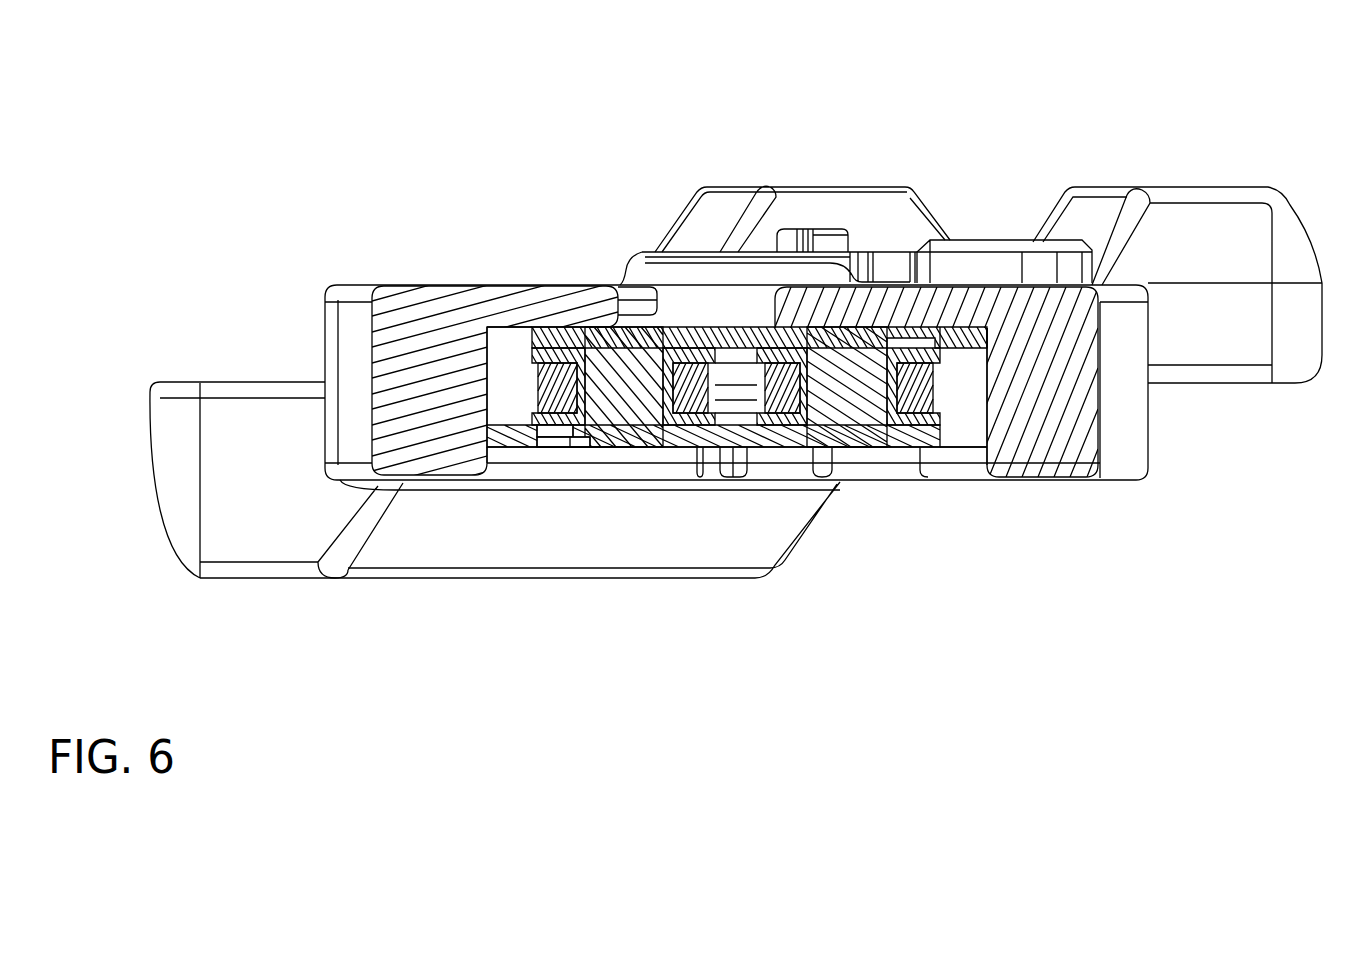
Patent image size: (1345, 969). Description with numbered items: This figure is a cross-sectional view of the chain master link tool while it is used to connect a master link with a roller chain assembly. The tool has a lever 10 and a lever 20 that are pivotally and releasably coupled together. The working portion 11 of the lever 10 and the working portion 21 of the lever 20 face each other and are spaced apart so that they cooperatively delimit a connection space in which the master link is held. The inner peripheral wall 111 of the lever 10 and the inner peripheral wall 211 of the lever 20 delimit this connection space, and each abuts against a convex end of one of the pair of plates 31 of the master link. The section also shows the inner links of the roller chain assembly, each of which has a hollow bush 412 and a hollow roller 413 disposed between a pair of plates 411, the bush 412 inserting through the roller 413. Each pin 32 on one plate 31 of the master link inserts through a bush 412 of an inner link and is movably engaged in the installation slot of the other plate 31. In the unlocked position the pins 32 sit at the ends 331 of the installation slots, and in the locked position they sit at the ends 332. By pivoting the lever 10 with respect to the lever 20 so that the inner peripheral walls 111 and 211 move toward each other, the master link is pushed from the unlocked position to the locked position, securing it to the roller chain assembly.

The lever 10 is at (290, 596).
The lever 20 is at (1184, 172).
The working portion 21 is at (520, 318).
The inner peripheral wall 211 is at (497, 340).
The plate 411 is at (688, 348).
The hollow bush 412 is at (594, 355).
The hollow roller 413 is at (722, 340).
The pin 32 is at (859, 342).
The plate 31 is at (967, 333).
The end 331 is at (652, 447).
The end 332 is at (557, 445).
The working portion 11 is at (952, 462).
The inner peripheral wall 111 is at (978, 432).